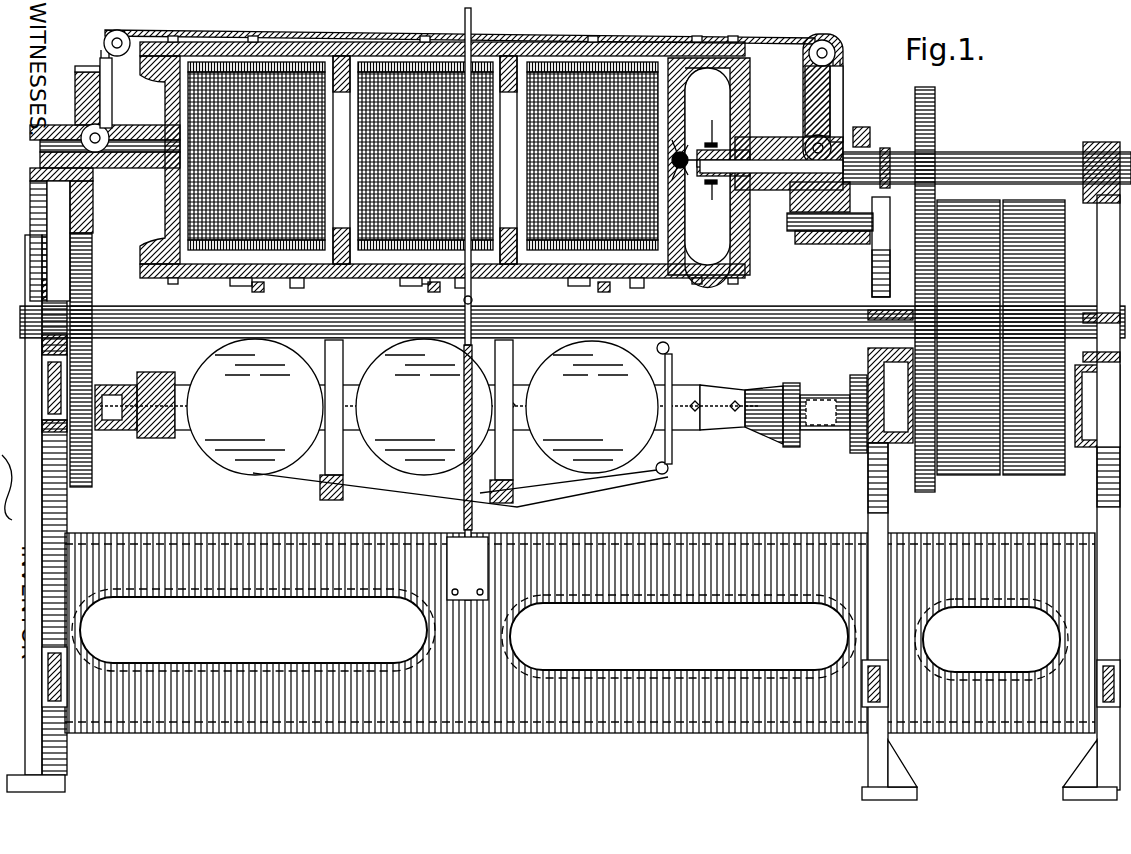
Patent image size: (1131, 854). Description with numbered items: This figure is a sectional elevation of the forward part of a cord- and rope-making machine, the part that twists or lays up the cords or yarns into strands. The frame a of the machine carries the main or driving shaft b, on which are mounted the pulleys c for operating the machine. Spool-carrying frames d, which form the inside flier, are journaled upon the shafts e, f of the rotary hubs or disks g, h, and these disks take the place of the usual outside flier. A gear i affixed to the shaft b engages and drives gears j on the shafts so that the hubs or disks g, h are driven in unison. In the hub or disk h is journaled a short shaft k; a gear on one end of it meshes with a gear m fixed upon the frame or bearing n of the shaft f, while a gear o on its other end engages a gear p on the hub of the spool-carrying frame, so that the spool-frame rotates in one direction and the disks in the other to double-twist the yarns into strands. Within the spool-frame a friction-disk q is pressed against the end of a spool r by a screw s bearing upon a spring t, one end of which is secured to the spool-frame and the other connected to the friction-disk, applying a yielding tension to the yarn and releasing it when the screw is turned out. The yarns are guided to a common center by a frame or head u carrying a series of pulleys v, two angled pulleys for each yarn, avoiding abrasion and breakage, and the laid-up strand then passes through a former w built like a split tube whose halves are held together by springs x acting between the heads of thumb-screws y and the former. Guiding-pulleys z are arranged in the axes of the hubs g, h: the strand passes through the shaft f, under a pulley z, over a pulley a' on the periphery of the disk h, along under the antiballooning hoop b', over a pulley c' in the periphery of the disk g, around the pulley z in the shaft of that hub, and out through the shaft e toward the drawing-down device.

The frame a is at (592, 506).
The pulley a' is at (839, 100).
The main or driving shaft b is at (572, 339).
The antiballooning hoop b' is at (460, 302).
The pulleys c is at (1001, 351).
The pulley c' is at (98, 43).
The spool-carrying frame d is at (600, 42).
The shaft e is at (152, 168).
The shaft f is at (884, 148).
The rotary hub or disk g is at (112, 104).
The rotary hub or disk h is at (822, 432).
The gear i is at (93, 284).
The gear j is at (77, 98).
The short shaft k is at (822, 245).
The gear m is at (857, 279).
The frame or bearing n is at (805, 82).
The gear o is at (792, 232).
The gear p is at (790, 196).
The friction-disk q is at (232, 282).
The spool r is at (255, 278).
The screw s is at (433, 294).
The spring t is at (300, 288).
The frame or head u is at (680, 452).
The pulleys v is at (681, 472).
The former w is at (721, 145).
The springs x is at (686, 167).
The thumb-screws y is at (710, 146).
The pulleys z is at (112, 130).